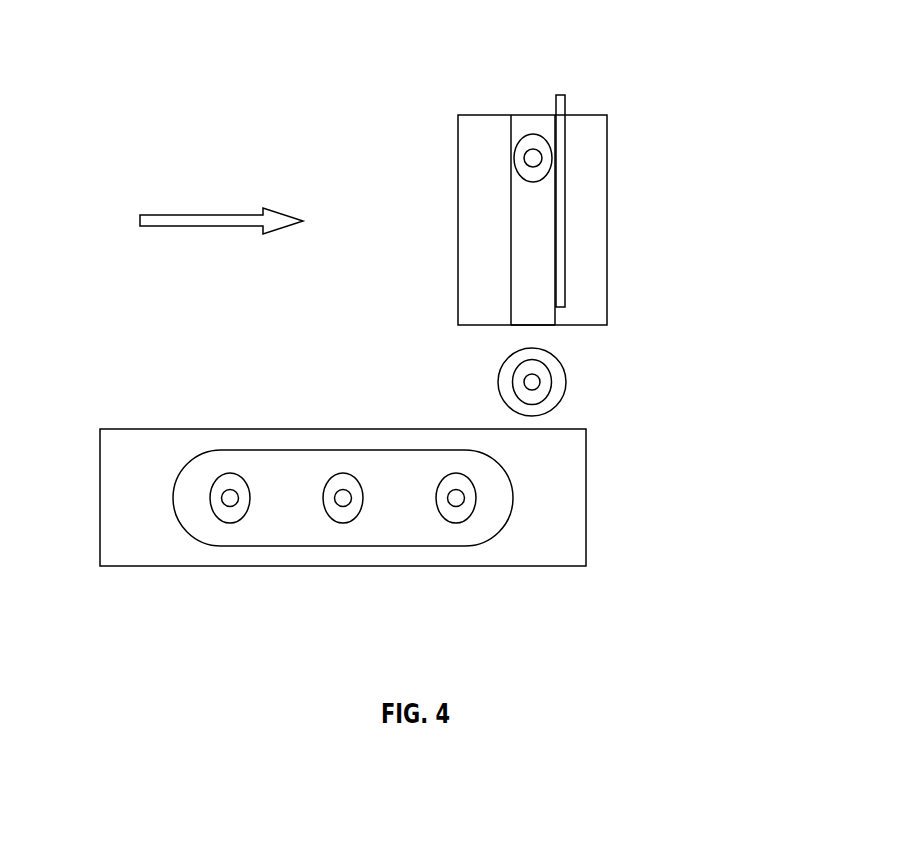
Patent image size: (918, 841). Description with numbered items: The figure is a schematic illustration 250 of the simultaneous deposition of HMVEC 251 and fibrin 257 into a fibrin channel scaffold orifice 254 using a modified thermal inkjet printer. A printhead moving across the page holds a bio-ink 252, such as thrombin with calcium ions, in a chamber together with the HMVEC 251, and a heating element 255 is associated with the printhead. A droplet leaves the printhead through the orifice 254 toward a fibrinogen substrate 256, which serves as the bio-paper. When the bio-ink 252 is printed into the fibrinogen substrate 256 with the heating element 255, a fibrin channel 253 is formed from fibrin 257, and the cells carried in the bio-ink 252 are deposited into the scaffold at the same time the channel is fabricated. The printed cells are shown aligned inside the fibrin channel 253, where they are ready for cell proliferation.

The schematic illustration 250 is at (231, 52).
The HMVEC 251 is at (533, 134).
The bio-ink 252 is at (537, 283).
The fibrin channel 253 is at (456, 522).
The fibrin channel scaffold orifice 254 is at (548, 325).
The heating element 255 is at (567, 102).
The fibrinogen substrate 256 is at (192, 403).
The fibrin 257 is at (222, 546).